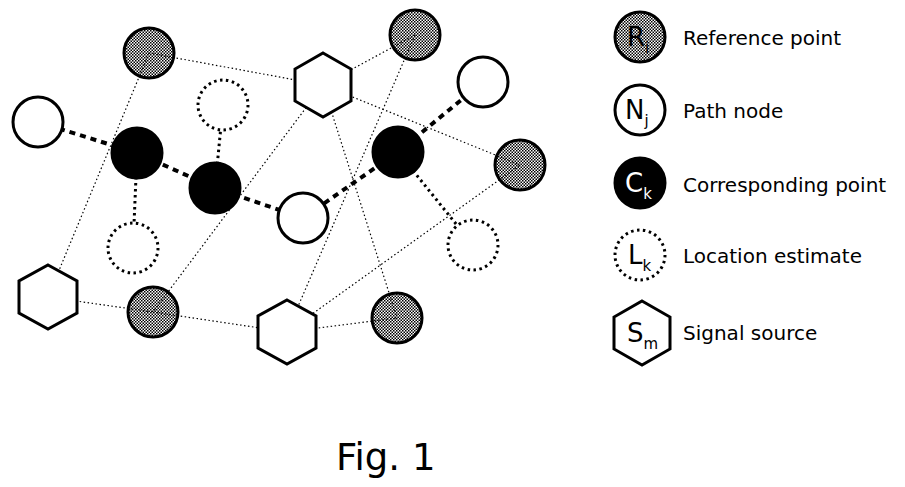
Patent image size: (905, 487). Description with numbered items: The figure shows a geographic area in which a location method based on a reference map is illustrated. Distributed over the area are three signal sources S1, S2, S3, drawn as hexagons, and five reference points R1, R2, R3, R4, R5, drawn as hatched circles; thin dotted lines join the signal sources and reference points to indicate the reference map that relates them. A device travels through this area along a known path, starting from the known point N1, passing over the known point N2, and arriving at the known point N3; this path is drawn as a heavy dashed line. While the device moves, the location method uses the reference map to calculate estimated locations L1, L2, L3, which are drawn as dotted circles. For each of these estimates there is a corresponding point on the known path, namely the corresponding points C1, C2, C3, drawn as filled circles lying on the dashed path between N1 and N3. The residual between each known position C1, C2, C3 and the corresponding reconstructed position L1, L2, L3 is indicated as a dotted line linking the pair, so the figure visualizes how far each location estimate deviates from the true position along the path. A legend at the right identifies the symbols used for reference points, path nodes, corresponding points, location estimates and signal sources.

The reference point R1 is at (149, 53).
The reference point R2 is at (415, 35).
The reference point R3 is at (153, 312).
The reference point R4 is at (520, 165).
The reference point R5 is at (397, 318).
The known point N1 is at (38, 122).
The known point N2 is at (303, 218).
The known point N3 is at (483, 82).
The corresponding point on the known path C1 is at (137, 153).
The corresponding point on the known path C2 is at (215, 188).
The corresponding point on the known path C3 is at (398, 152).
The estimated location L1 is at (133, 248).
The estimated location L2 is at (223, 105).
The estimated location L3 is at (473, 245).
The signal source S1 is at (48, 297).
The signal source S2 is at (323, 85).
The signal source S3 is at (287, 332).